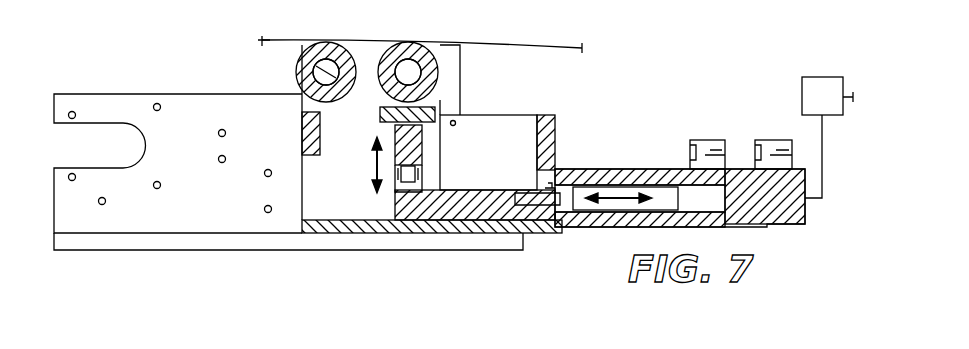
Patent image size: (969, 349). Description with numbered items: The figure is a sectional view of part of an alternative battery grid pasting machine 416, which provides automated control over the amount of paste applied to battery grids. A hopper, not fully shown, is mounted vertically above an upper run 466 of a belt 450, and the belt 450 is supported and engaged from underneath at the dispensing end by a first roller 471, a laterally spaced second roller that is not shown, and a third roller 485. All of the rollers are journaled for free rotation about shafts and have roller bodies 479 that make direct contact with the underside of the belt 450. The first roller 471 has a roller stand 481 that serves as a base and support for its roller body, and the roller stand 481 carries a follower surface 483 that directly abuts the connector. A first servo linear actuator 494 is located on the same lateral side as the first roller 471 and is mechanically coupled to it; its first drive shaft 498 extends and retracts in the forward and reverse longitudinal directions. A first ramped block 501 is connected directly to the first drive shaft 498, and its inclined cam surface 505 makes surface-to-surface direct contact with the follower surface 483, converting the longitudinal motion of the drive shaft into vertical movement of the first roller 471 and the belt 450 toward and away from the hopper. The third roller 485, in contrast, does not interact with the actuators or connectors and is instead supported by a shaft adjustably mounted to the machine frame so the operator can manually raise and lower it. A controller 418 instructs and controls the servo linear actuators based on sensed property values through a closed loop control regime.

The battery grid pasting machine 416 is at (145, 54).
The controller 418 is at (818, 77).
The belt 450 is at (525, 41).
The upper run 466 is at (268, 40).
The first roller 471 is at (442, 70).
The roller bodies 479 is at (327, 43).
The roller stand 481 is at (422, 160).
The follower surface 483 is at (397, 192).
The third roller 485 is at (296, 63).
The first servo linear actuator 494 is at (607, 170).
The first drive shaft 498 is at (523, 192).
The first ramped block 501 is at (462, 210).
The first ramped cam surface 505 is at (490, 190).